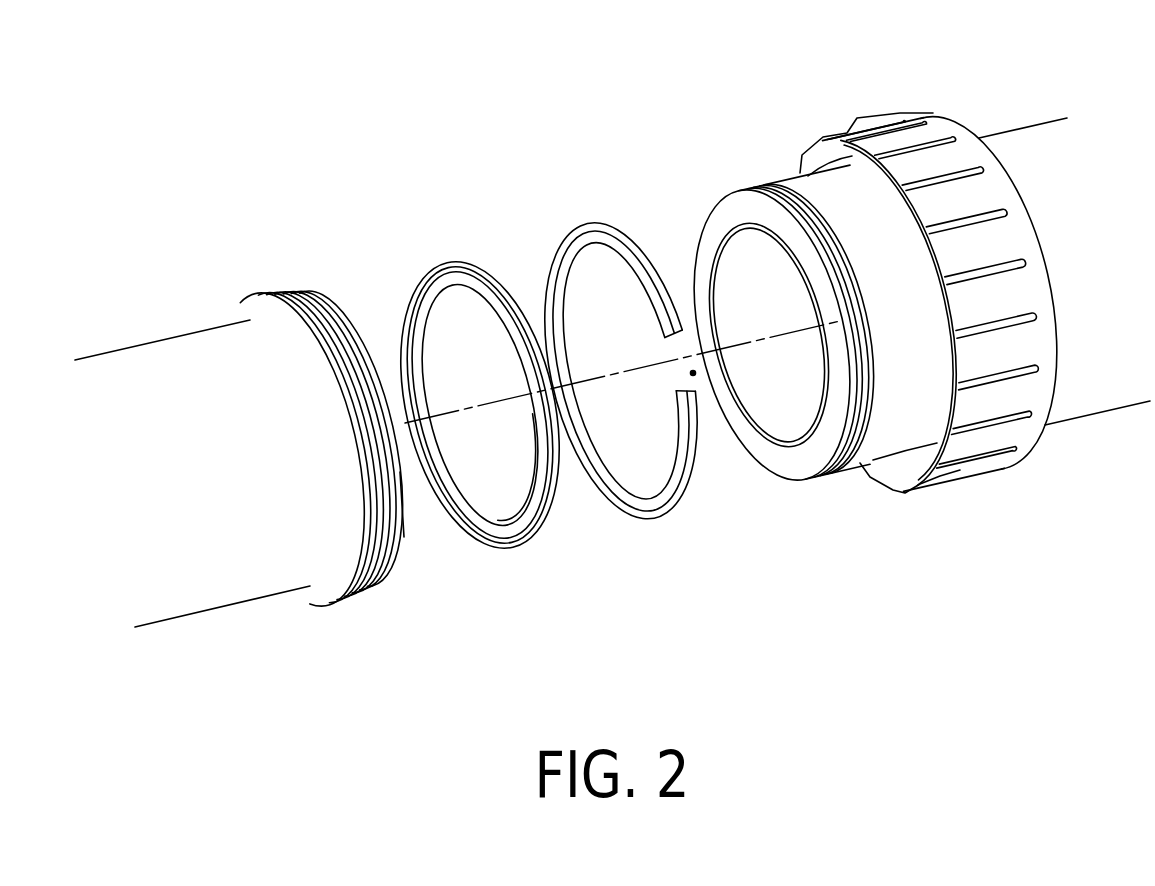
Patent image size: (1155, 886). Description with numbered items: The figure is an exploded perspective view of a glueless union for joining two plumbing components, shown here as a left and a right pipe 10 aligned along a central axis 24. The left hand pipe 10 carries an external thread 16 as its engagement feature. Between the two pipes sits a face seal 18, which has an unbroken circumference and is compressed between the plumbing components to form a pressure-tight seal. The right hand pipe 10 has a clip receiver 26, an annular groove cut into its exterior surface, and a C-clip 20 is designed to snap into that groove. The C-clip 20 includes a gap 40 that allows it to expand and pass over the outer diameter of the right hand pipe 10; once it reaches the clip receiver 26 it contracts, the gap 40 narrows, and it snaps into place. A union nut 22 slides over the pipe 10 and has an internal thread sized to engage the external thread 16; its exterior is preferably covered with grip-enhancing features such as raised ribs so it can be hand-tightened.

The pipe 10 is at (215, 375).
The external thread 16 is at (363, 598).
The face seal 18 is at (448, 267).
The C-clip 20 is at (592, 225).
The union nut 22 is at (980, 445).
The central axis 24 is at (598, 363).
The clip receiver 26 is at (778, 195).
The gap 40 is at (693, 373).